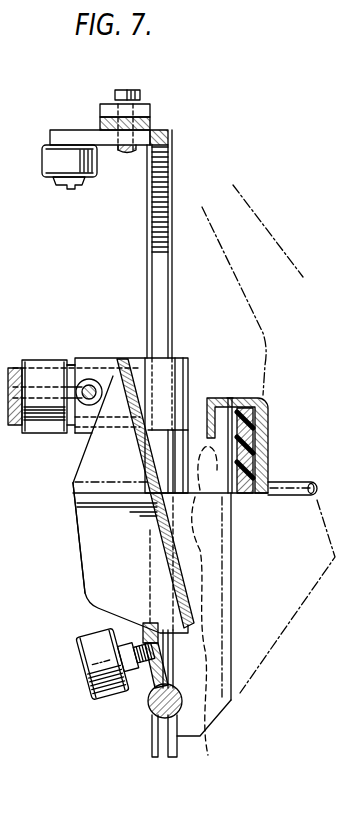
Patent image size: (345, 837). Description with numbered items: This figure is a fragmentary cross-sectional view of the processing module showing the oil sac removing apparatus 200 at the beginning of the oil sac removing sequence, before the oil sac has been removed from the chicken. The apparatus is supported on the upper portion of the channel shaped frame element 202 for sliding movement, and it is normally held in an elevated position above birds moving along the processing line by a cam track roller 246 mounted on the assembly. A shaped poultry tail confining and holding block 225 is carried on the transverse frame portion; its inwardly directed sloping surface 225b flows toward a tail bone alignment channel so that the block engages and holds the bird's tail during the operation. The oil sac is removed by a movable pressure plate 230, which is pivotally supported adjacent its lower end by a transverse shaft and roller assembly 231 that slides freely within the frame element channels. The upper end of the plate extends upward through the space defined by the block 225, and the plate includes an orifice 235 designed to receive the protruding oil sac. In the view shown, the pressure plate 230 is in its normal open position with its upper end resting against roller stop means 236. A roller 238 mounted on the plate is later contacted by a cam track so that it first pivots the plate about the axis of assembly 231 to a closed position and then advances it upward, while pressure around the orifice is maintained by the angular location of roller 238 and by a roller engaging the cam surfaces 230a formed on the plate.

The oil sac removing apparatus 200 is at (188, 580).
The channel shaped frame element 202 is at (173, 170).
The poultry tail confining and holding block 225 is at (266, 400).
The inwardly directed sloping surface 225b is at (228, 397).
The pressure plate 230 is at (112, 362).
The cam surface 230a is at (72, 478).
The transverse shaft and roller assembly 231 is at (137, 711).
The orifice 235 is at (163, 546).
The roller stop means 236 is at (86, 381).
The roller 238 is at (97, 667).
The cam track roller 246 is at (48, 430).